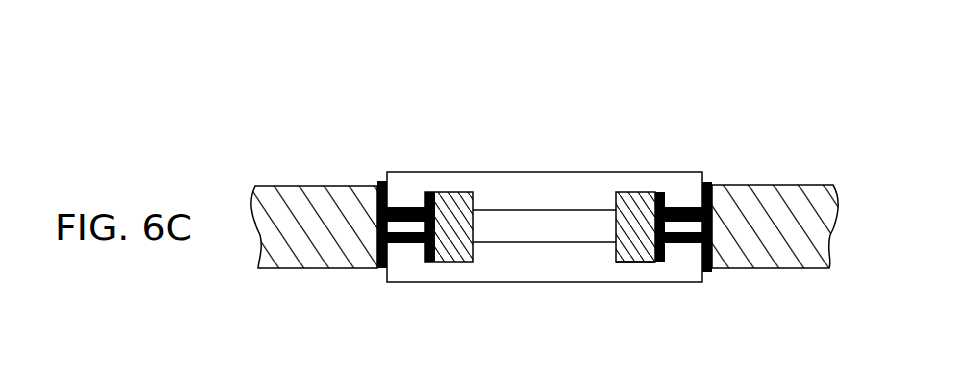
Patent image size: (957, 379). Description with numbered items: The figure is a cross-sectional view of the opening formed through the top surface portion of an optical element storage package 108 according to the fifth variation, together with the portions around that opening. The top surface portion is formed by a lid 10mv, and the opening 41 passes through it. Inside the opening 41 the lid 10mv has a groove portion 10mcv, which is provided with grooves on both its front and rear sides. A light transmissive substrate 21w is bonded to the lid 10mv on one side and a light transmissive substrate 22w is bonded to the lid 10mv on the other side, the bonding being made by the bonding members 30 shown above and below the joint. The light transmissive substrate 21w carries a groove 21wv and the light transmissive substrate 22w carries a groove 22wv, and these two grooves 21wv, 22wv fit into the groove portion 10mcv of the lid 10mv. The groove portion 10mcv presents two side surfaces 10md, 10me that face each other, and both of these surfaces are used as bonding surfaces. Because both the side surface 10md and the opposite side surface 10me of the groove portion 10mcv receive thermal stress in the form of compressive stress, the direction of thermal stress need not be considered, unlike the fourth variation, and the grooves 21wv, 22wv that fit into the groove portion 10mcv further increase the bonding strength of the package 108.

The optical element storage package 108 is at (852, 80).
The lid 10mv is at (300, 198).
The side surface 10md is at (383, 270).
The side surface 10me is at (431, 192).
The groove portion 10mcv is at (403, 233).
The light transmissive substrate 21w is at (525, 182).
The light transmissive substrate 22w is at (563, 268).
The groove 21wv is at (458, 192).
The groove 22wv is at (637, 262).
The opening 41 is at (616, 192).
The bonding member 30 is at (710, 184).